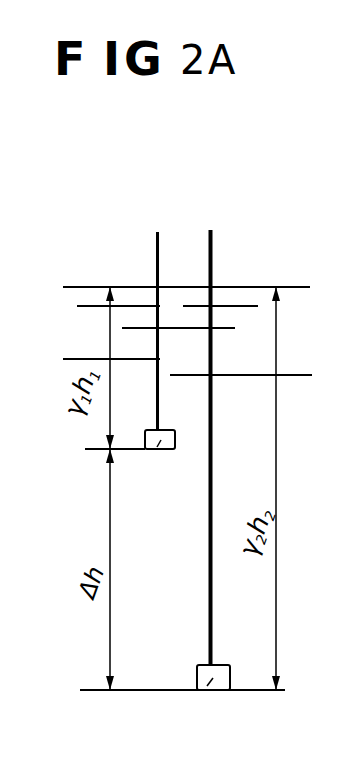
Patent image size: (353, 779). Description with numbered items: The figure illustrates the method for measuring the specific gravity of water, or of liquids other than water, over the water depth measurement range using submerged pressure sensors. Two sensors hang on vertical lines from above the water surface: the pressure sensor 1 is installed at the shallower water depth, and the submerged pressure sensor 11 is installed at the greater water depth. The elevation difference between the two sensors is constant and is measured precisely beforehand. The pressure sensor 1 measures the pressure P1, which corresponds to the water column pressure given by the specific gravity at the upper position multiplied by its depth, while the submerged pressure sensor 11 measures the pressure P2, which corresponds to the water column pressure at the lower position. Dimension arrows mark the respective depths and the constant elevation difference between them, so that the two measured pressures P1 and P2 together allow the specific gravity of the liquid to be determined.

The pressure sensor 1 is at (160, 440).
The submerged pressure sensor 11 is at (212, 678).
The pressure P1 is at (157, 311).
The pressure P2 is at (210, 428).